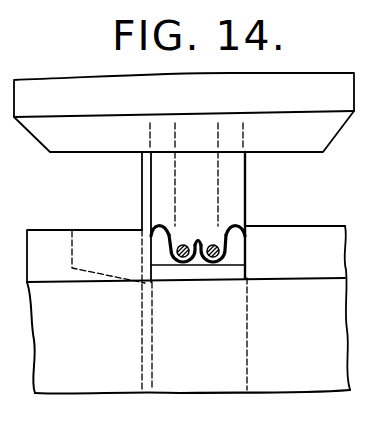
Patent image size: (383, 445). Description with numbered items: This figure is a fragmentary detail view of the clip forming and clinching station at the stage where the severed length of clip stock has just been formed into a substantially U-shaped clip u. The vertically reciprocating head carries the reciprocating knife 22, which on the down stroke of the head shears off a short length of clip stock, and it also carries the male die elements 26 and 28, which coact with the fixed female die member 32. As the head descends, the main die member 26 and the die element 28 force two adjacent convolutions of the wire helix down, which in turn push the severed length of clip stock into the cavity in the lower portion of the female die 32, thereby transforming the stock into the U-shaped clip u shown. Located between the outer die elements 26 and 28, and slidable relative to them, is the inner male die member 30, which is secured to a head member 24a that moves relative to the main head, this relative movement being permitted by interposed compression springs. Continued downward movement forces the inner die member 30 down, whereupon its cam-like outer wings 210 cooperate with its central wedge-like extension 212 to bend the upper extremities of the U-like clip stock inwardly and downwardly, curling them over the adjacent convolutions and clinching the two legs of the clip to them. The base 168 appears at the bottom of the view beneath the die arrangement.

The head member 24a is at (303, 82).
The male die element 28 is at (245, 173).
The reciprocating knife 22 is at (85, 239).
The main die member 26 is at (246, 248).
The base member 168 is at (105, 395).
The outer wings 210 is at (163, 230).
The central wedge-like extension 212 is at (203, 238).
The inner male die member 30 is at (202, 245).
The fixed female die member 32 is at (243, 257).
The U-shaped clip u is at (173, 239).